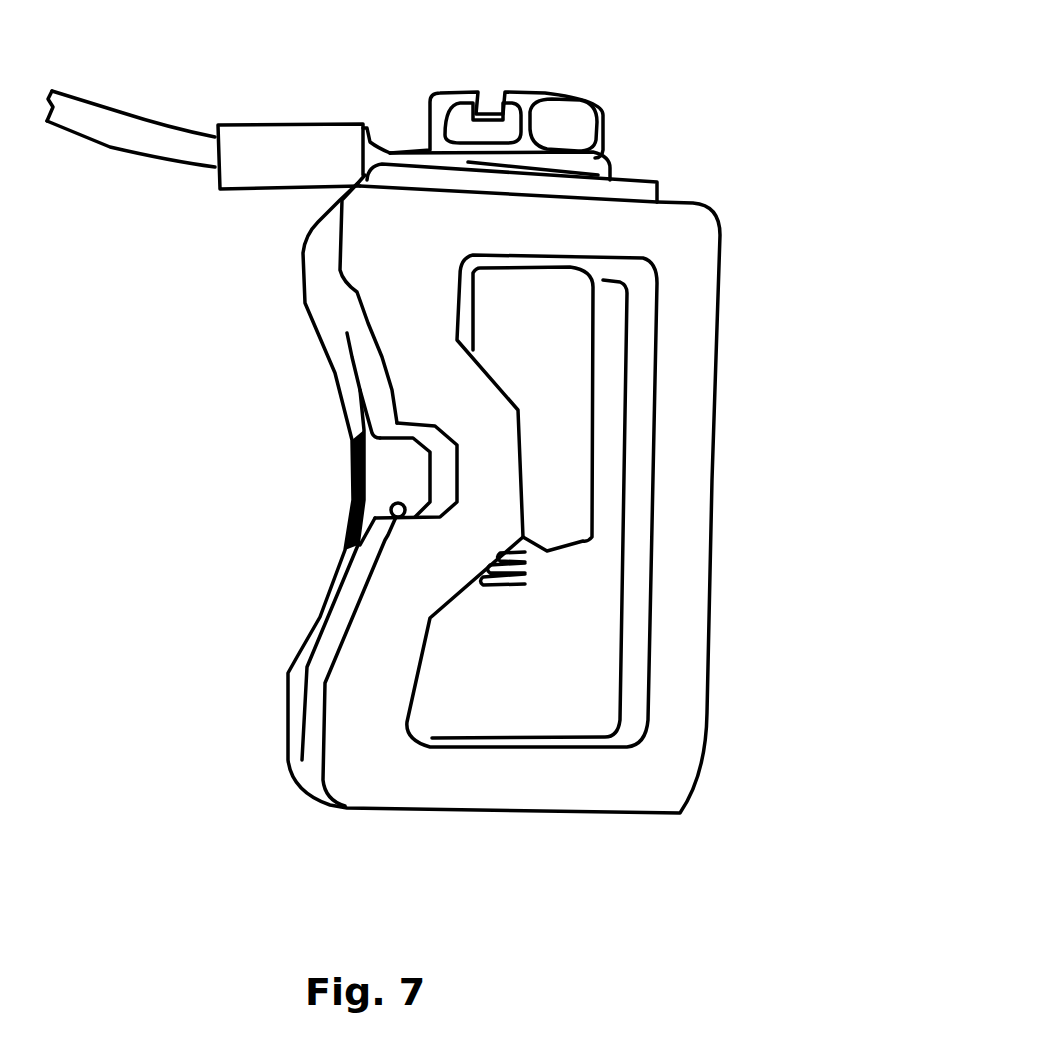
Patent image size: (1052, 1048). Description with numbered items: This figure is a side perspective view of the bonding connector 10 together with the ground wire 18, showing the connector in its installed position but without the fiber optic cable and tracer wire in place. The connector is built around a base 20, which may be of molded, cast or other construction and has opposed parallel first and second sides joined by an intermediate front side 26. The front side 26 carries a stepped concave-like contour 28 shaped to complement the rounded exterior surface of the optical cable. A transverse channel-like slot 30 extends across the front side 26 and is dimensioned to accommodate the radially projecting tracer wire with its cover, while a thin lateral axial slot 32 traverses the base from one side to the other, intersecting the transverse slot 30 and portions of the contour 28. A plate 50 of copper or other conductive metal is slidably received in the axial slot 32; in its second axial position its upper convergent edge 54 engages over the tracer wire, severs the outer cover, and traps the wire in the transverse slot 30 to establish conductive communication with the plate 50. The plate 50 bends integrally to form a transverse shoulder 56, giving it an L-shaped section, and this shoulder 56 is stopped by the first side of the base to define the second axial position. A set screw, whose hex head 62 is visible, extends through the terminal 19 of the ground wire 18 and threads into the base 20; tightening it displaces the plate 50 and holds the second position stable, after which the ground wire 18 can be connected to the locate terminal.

The bonding connector 10 is at (722, 83).
The ground wire 18 is at (95, 118).
The terminal 19 is at (607, 167).
The base 20 is at (733, 710).
The front side 26 is at (293, 328).
The stepped concave-like contour 28 is at (316, 619).
The transverse channel-like slot 30 is at (445, 470).
The thin lateral axial slot 32 is at (344, 376).
The plate 50 is at (378, 481).
The upper convergent edge 54 is at (396, 520).
The transverse shoulder 56 is at (654, 185).
The hex head 62 is at (563, 113).